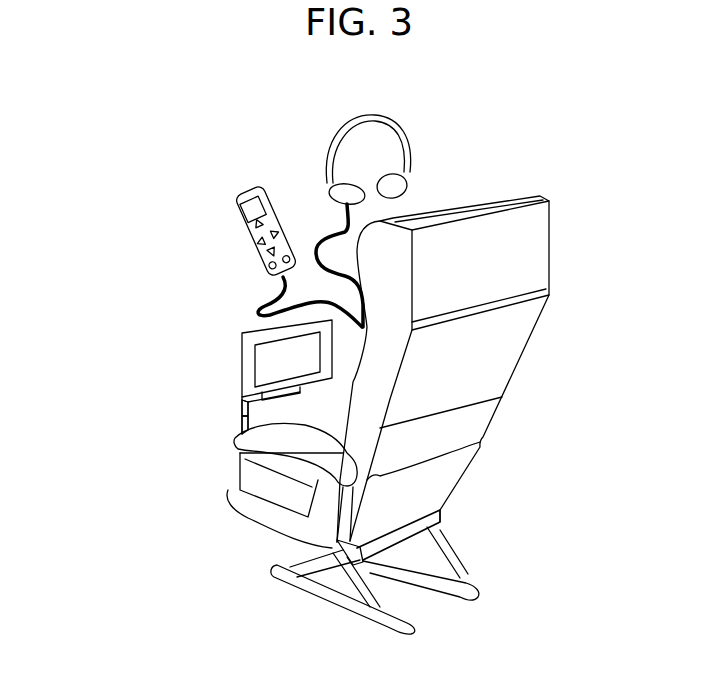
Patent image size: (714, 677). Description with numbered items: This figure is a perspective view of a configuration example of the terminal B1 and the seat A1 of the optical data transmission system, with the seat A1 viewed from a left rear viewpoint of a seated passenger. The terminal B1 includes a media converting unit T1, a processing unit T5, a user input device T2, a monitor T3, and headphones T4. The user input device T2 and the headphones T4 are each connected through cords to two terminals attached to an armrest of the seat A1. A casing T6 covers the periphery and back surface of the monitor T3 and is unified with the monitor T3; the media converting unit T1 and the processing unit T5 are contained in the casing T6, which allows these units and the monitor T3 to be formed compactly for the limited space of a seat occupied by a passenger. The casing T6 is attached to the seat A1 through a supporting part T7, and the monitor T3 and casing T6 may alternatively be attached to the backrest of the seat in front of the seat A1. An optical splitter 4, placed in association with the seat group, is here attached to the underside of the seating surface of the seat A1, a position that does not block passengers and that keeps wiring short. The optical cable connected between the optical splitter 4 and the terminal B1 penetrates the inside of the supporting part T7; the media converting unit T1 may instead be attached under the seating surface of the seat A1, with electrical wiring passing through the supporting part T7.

The seat A1 is at (553, 233).
The optical splitter 4 is at (430, 522).
The terminal B1 is at (101, 112).
The headphones T4 is at (327, 157).
The user input device T2 is at (240, 232).
The monitor T3 is at (272, 359).
The casing T6 is at (250, 386).
The media converting unit T1 is at (157, 408).
The processing unit T5 is at (157, 408).
The supporting part T7 is at (240, 426).